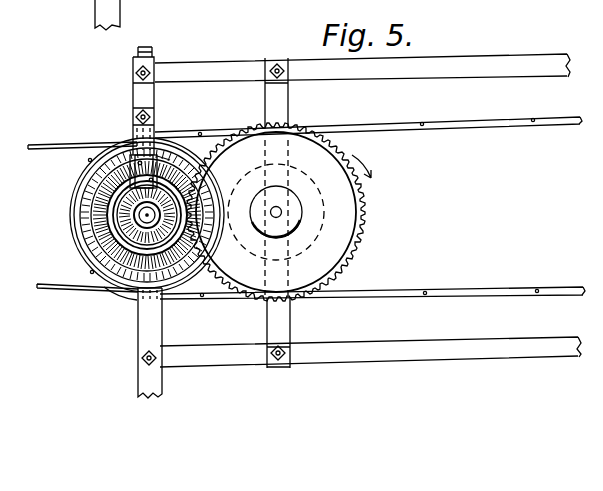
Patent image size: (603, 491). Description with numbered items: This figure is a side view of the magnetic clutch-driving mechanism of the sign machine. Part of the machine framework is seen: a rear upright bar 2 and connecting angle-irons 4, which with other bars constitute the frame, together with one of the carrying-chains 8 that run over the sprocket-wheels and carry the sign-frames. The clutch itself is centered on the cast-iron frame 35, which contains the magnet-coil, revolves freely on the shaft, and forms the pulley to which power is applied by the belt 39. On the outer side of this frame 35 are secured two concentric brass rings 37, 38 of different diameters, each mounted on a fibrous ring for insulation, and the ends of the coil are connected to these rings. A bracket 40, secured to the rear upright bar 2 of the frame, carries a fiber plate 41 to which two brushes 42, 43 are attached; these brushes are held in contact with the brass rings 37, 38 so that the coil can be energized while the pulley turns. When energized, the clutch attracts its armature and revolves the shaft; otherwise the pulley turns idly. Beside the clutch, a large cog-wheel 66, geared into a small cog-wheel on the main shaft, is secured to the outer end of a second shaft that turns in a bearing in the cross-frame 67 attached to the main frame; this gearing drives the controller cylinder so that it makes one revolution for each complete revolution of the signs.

The upright bar 2 is at (147, 222).
The connecting angle-iron 4 is at (368, 210).
The chain 8 is at (455, 125).
The cast-iron frame 35 is at (80, 213).
The brass ring 37 is at (100, 228).
The brass ring 38 is at (117, 231).
The belt 39 is at (88, 136).
The bracket 40 is at (150, 150).
The fiber plate 41 is at (163, 158).
The brush 42 is at (86, 164).
The brush 43 is at (131, 186).
The large cog-wheel 66 is at (317, 235).
The cross-frame 67 is at (299, 318).